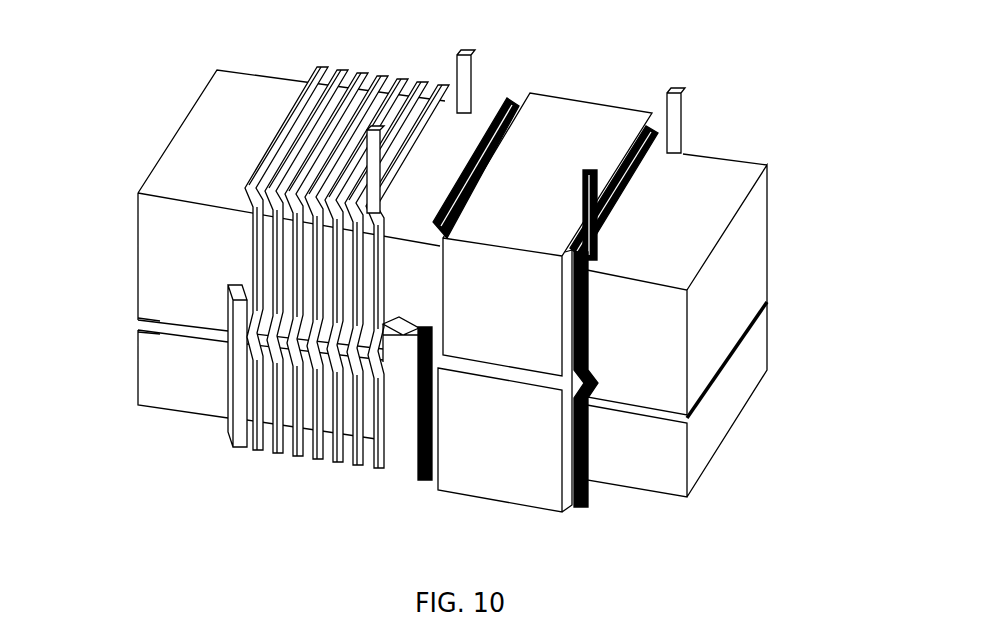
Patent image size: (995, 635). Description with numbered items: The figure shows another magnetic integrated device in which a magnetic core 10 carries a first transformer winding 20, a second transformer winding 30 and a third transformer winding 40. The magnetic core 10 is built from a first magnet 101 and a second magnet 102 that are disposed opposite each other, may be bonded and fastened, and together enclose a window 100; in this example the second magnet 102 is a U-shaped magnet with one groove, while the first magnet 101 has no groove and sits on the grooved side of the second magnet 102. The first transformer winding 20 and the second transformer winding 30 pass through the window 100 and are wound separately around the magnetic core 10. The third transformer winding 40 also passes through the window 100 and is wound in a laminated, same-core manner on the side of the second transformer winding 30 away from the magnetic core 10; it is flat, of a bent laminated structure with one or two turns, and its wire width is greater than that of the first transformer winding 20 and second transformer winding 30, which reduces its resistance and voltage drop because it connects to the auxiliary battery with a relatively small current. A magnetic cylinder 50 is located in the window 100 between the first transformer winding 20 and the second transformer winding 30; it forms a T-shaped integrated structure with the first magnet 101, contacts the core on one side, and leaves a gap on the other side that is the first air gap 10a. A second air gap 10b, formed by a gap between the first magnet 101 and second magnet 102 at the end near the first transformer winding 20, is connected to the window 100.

The magnetic core 10 is at (515, 291).
The first air gap 10a is at (399, 327).
The second air gap 10b is at (145, 322).
The first transformer winding 20 is at (402, 80).
The second transformer winding 30 is at (508, 98).
The third transformer winding 40 is at (611, 125).
The magnetic cylinder 50 is at (395, 348).
The window 100 is at (592, 373).
The first magnet 101 is at (652, 455).
The second magnet 102 is at (628, 331).